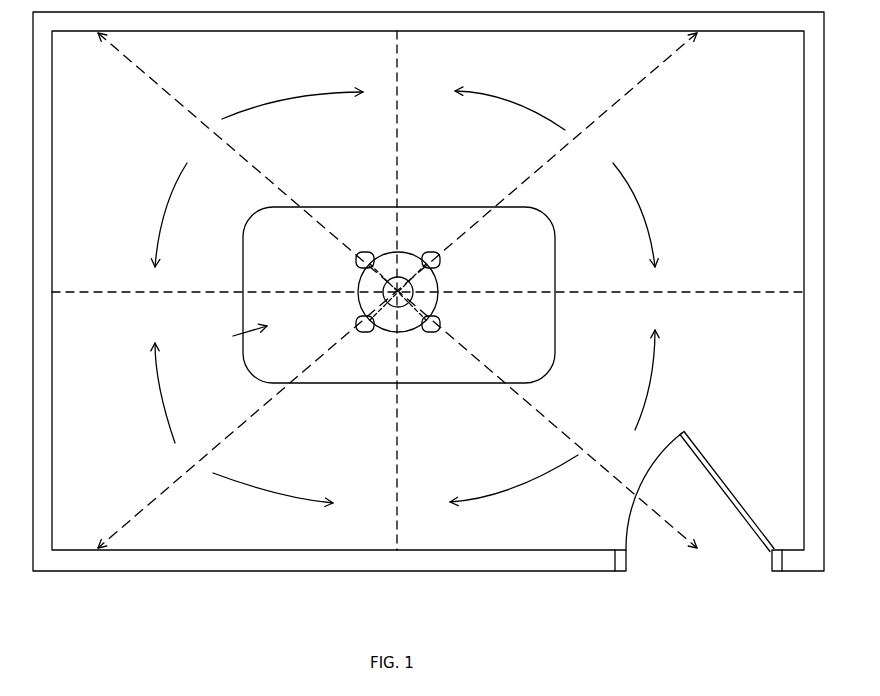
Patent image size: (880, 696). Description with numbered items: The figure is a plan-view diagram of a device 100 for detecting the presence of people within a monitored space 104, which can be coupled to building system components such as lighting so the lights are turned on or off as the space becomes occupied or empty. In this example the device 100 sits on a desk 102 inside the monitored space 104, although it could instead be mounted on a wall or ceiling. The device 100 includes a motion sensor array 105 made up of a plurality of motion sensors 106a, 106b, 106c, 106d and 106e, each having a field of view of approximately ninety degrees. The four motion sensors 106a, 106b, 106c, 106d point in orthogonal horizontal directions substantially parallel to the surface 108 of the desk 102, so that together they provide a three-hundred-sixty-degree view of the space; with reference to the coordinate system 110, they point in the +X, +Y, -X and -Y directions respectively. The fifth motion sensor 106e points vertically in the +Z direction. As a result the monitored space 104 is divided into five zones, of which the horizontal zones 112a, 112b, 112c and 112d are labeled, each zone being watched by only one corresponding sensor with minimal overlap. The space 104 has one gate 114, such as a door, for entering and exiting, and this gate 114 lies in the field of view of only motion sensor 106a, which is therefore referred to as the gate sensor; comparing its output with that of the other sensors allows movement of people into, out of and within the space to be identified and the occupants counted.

The device 100 is at (358, 285).
The desk 102 is at (556, 246).
The monitored space 104 is at (433, 66).
The motion sensor array 105 is at (230, 337).
The motion sensor 106a is at (433, 327).
The motion sensor 106b is at (441, 257).
The motion sensor 106c is at (358, 254).
The motion sensor 106d is at (362, 327).
The motion sensor 106e is at (405, 282).
The surface 108 is at (526, 315).
The coordinate system 110 is at (608, 112).
The zone 112a is at (554, 418).
The zone 112b is at (556, 177).
The zone 112c is at (257, 177).
The zone 112d is at (242, 425).
The gate 114 is at (723, 564).